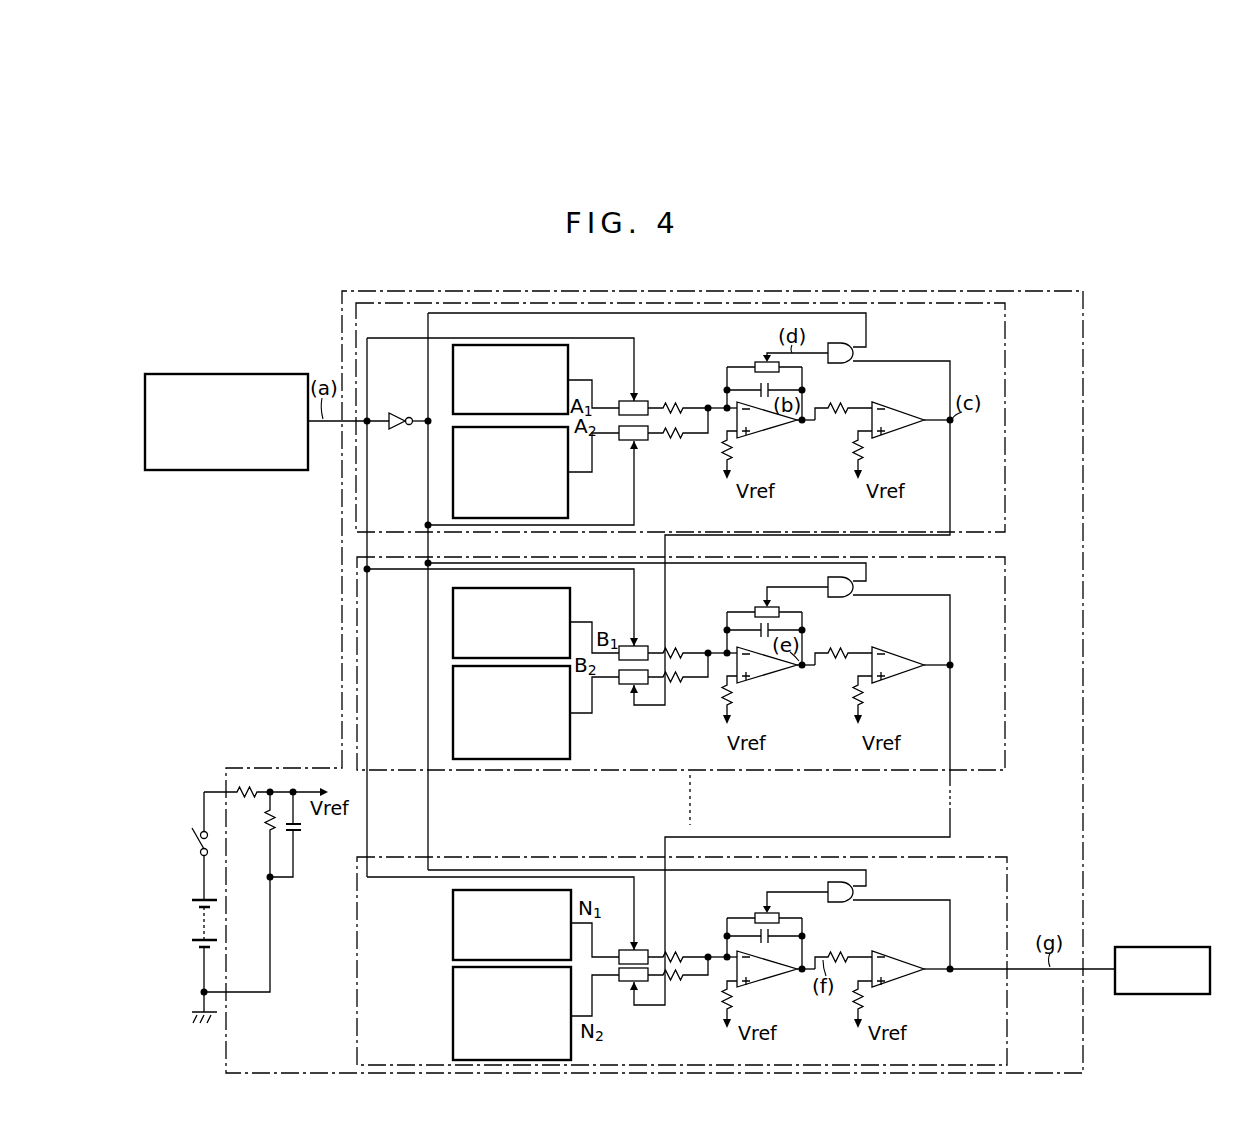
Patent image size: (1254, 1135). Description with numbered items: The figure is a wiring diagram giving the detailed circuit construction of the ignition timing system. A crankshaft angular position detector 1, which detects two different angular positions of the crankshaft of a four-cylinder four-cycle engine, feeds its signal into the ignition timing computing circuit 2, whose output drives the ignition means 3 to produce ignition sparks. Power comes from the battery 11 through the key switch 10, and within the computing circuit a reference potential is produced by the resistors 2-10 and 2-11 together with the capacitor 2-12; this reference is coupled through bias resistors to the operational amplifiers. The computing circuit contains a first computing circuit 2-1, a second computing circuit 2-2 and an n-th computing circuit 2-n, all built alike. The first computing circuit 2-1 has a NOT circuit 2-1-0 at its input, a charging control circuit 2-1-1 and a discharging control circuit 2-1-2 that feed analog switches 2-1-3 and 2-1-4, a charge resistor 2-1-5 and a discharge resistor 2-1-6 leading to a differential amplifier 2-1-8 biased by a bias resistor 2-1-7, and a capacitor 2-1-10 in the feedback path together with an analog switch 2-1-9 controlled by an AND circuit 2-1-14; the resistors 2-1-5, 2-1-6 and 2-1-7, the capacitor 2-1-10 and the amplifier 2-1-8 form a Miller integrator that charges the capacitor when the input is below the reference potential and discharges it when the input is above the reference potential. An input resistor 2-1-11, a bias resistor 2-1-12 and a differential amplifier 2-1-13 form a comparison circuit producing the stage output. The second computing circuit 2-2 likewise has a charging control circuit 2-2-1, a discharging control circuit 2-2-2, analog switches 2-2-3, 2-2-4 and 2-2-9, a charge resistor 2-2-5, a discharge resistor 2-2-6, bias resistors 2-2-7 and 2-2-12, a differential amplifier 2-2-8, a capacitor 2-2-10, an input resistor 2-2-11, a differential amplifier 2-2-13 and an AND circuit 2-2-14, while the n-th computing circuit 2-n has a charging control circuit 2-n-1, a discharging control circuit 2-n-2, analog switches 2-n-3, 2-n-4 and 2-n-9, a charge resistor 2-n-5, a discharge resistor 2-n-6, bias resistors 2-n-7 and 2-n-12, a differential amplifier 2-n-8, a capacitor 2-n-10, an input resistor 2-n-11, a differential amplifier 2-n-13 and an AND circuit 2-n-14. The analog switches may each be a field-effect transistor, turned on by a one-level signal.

The crankshaft angular position detector 1 is at (213, 373).
The ignition timing computing circuit 2 is at (341, 524).
The ignition means 3 is at (1161, 946).
The key switch 10 is at (190, 840).
The battery 11 is at (199, 924).
The resistor 2-10 is at (245, 786).
The resistor 2-11 is at (265, 826).
The capacitor 2-12 is at (303, 832).
The first computing circuit 2-1 is at (1006, 398).
The second computing circuit 2-2 is at (1006, 695).
The n-th computing circuit 2-n is at (1008, 940).
The NOT circuit 2-1-0 is at (398, 410).
The charging control circuit 2-1-1 is at (494, 345).
The discharging control circuit 2-1-2 is at (569, 505).
The analog switch 2-1-3 is at (628, 399).
The analog switch 2-1-4 is at (641, 442).
The charge resistor 2-1-5 is at (676, 405).
The discharge resistor 2-1-6 is at (683, 436).
The bias resistor 2-1-7 is at (731, 452).
The differential amplifier 2-1-8 is at (752, 435).
The analog switch 2-1-9 is at (760, 361).
The capacitor 2-1-10 is at (771, 389).
The input resistor 2-1-11 is at (837, 411).
The bias resistor 2-1-12 is at (862, 452).
The differential amplifier 2-1-13 is at (899, 404).
The AND circuit 2-1-14 is at (856, 350).
The charging control circuit 2-2-1 is at (571, 590).
The discharging control circuit 2-2-2 is at (571, 751).
The analog switch 2-2-3 is at (632, 644).
The analog switch 2-2-4 is at (628, 686).
The charge resistor 2-2-5 is at (683, 649).
The discharge resistor 2-2-6 is at (683, 681).
The bias resistor 2-2-7 is at (730, 706).
The differential amplifier 2-2-8 is at (752, 680).
The analog switch 2-2-9 is at (756, 604).
The capacitor 2-2-10 is at (760, 628).
The input resistor 2-2-11 is at (834, 650).
The bias resistor 2-2-12 is at (862, 708).
The differential amplifier 2-2-13 is at (898, 680).
The AND circuit 2-2-14 is at (856, 587).
The charging control circuit 2-n-1 is at (453, 922).
The discharging control circuit 2-n-2 is at (453, 998).
The analog switch 2-n-3 is at (633, 947).
The analog switch 2-n-4 is at (636, 990).
The charge resistor 2-n-5 is at (683, 953).
The discharge resistor 2-n-6 is at (683, 979).
The bias resistor 2-n-7 is at (728, 1002).
The differential amplifier 2-n-8 is at (745, 990).
The analog switch 2-n-9 is at (758, 912).
The capacitor 2-n-10 is at (771, 934).
The input resistor 2-n-11 is at (843, 951).
The bias resistor 2-n-12 is at (862, 1008).
The differential amplifier 2-n-13 is at (897, 985).
The AND circuit 2-n-14 is at (856, 892).